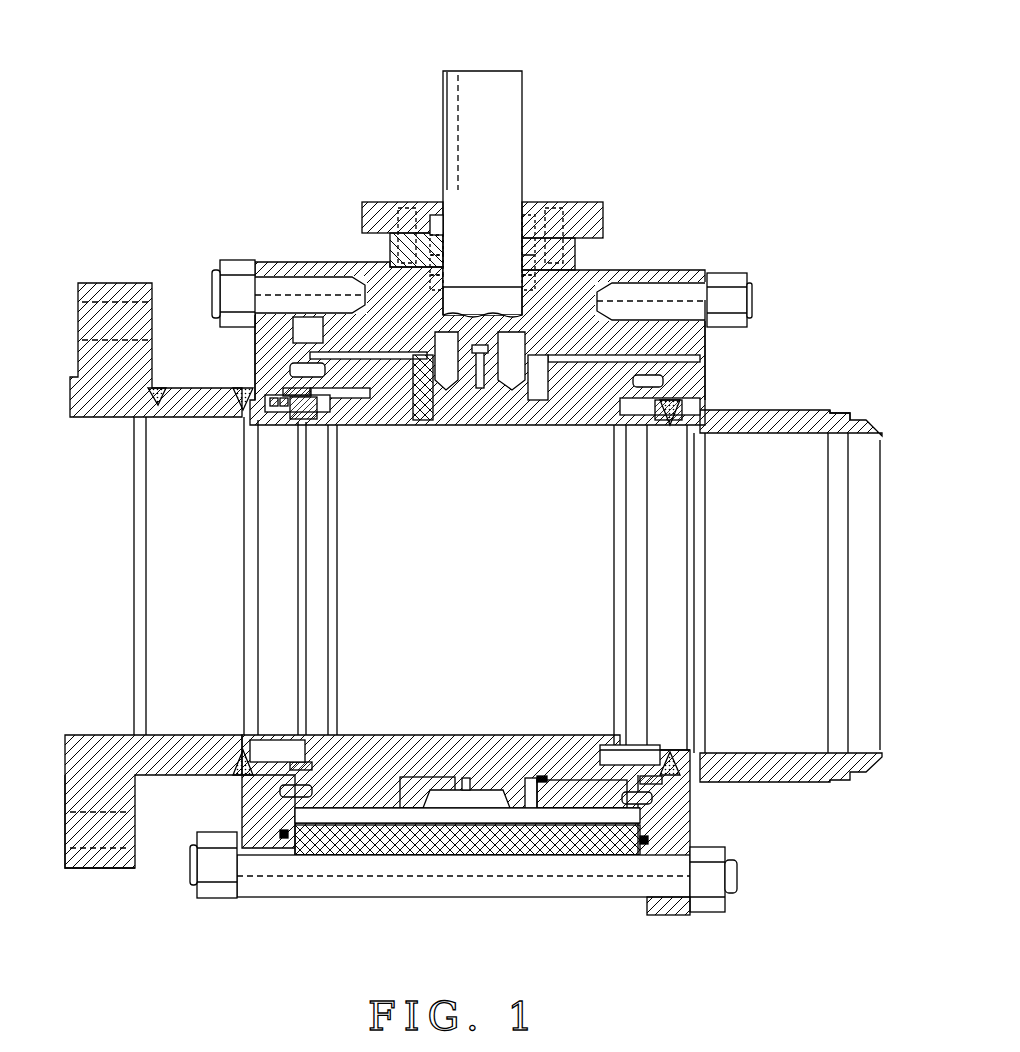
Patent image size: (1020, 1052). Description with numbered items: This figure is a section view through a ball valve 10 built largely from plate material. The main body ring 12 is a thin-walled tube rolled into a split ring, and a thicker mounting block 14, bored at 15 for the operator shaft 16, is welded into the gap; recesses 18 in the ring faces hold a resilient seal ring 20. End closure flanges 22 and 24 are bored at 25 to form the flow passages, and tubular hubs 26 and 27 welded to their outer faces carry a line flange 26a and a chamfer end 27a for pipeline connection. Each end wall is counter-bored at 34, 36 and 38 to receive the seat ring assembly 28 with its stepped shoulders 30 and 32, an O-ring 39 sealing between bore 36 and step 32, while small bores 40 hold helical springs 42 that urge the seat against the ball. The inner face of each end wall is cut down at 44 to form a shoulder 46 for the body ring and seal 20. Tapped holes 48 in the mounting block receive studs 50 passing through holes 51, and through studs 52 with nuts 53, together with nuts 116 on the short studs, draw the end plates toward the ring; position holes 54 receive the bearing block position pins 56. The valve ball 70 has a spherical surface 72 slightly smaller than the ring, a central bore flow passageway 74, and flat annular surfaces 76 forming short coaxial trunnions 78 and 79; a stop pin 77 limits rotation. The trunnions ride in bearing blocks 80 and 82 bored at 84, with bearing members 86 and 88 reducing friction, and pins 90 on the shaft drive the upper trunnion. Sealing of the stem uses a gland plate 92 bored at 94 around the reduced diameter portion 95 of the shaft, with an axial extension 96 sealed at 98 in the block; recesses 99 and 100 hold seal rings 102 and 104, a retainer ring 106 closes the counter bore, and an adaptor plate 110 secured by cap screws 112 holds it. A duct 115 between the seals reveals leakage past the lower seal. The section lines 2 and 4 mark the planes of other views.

The section line 2- 2 is at (487, 62).
The section line 4- 4 is at (198, 348).
The ball valve 10 is at (296, 915).
The main body ring 12 is at (447, 846).
The mounting block 14 is at (640, 293).
The bore 15 is at (560, 305).
The operator shaft 16 is at (515, 122).
The recesses 18 is at (290, 836).
The resilient seal ring 20 is at (296, 327).
The end closure flange 22 is at (265, 355).
The end closure flange 24 is at (706, 353).
The bore 25 is at (270, 420).
The tubular hub 26 is at (176, 757).
The line flange 26a is at (98, 858).
The tubular hub 27 is at (786, 420).
The chamfer end 27a is at (885, 412).
The valve seat ring assembly 28 is at (307, 414).
The stepped shoulder 30 is at (282, 406).
The stepped shoulder 32 is at (290, 409).
The counter-bore 34 is at (686, 421).
The counter-bore 36 is at (673, 420).
The counter-bore 38 is at (296, 392).
The O-ring 39 is at (686, 408).
The small bores 40 is at (678, 410).
The helical springs 42 is at (255, 398).
The cut-down portion 44 is at (310, 280).
The shoulder 46 is at (297, 328).
The holes 48 is at (337, 285).
The studs 50 is at (265, 282).
The holes 51 is at (668, 916).
The through studs 52 is at (394, 872).
The nuts 53 is at (222, 895).
The position holes 54 is at (704, 337).
The position pins 56 is at (665, 382).
The valve ball 70 is at (385, 738).
The spherical surface 72 is at (618, 770).
The central bore flow passageway 74 is at (520, 590).
The flat annular surfaces 76 is at (400, 757).
The stop pin 77 is at (352, 392).
The trunnion 78 is at (423, 380).
The trunnion 79 is at (520, 805).
The bearing block 80 is at (580, 380).
The bearing block 82 is at (575, 790).
The bore 84 is at (453, 754).
The bearing member 86 is at (500, 796).
The bearing member 88 is at (541, 776).
The pins 90 is at (510, 370).
The gland plate 92 is at (392, 240).
The bore 94 is at (445, 268).
The reduced diameter portion 95 is at (510, 215).
The axial extension 96 is at (522, 277).
The seal 98 is at (527, 298).
The annular recess 99 is at (441, 278).
The annular recess 100 is at (440, 258).
The seal ring 102 is at (520, 270).
The seal ring 104 is at (420, 245).
The retainer ring 106 is at (447, 245).
The adaptor plate 110 is at (605, 218).
The cap screws 112 is at (575, 205).
The duct 115 is at (575, 258).
The nuts 116 is at (232, 262).